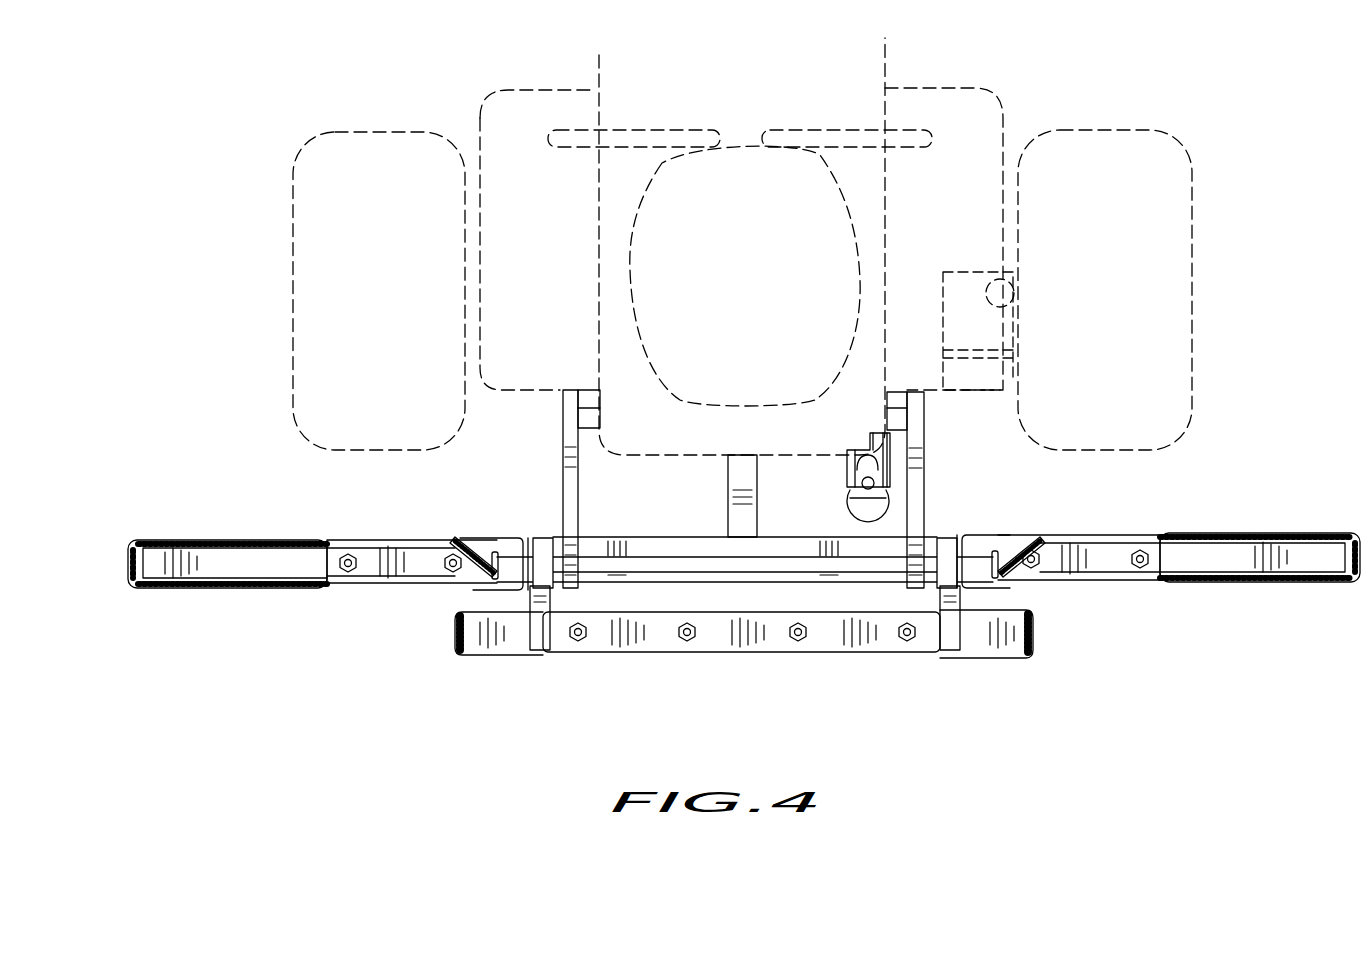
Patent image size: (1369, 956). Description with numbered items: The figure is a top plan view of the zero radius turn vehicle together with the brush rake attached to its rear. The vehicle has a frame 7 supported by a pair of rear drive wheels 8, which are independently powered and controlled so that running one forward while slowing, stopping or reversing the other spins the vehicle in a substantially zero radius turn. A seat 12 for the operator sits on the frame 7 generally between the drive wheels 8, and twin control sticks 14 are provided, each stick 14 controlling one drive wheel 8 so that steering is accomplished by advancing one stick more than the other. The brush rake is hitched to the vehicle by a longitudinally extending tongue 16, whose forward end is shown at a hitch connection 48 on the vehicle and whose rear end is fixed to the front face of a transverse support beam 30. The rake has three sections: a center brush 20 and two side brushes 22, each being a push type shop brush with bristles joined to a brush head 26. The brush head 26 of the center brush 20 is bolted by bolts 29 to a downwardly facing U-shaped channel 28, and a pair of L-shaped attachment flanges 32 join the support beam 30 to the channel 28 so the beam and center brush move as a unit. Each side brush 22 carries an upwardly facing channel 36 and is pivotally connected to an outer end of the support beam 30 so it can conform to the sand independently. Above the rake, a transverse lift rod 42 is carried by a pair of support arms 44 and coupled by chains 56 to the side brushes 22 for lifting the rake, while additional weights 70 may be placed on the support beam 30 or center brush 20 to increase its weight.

The frame 7 is at (500, 92).
The rear drive wheels 8 is at (293, 209).
The seat 12 is at (762, 296).
The control sticks 14 is at (763, 128).
The tongue 16 is at (729, 496).
The center brush 20 is at (720, 614).
The side brushes 22 is at (742, 548).
The brush head 26 is at (215, 565).
The U-shaped channel 28 is at (507, 647).
The bolts 29 is at (806, 640).
The support beam 30 is at (776, 540).
The L-shaped attachment flanges 32 is at (545, 545).
The U-shaped channel 36 is at (362, 540).
The lift rod 42 is at (640, 560).
The support arms 44 is at (562, 427).
The hitch 48 is at (849, 465).
The chains 56 is at (485, 540).
The weights 70 is at (708, 637).